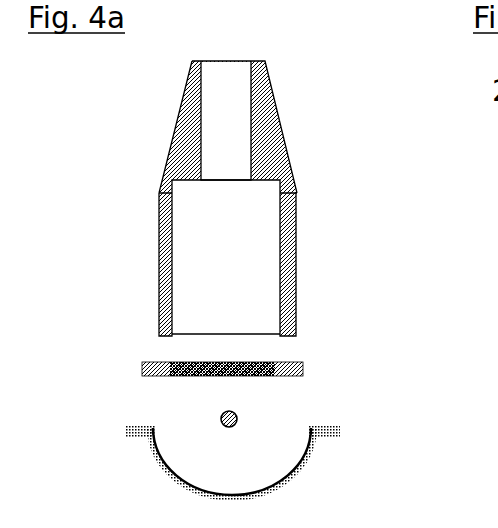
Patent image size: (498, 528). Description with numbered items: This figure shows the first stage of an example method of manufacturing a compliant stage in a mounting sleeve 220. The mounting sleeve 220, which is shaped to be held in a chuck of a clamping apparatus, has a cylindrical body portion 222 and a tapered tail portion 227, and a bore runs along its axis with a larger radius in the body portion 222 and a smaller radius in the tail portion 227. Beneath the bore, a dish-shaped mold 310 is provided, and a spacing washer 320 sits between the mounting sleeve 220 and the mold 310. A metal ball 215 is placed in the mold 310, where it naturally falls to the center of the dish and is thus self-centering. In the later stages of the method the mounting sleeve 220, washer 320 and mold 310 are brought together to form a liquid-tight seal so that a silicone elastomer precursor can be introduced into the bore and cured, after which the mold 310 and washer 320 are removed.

The mounting sleeve 220 is at (147, 134).
The tapered tail portion 227 is at (278, 128).
The cylindrical body portion 222 is at (296, 264).
The spacing washer 320 is at (303, 370).
The metal ball 215 is at (237, 417).
The dish-shaped mold 310 is at (302, 468).